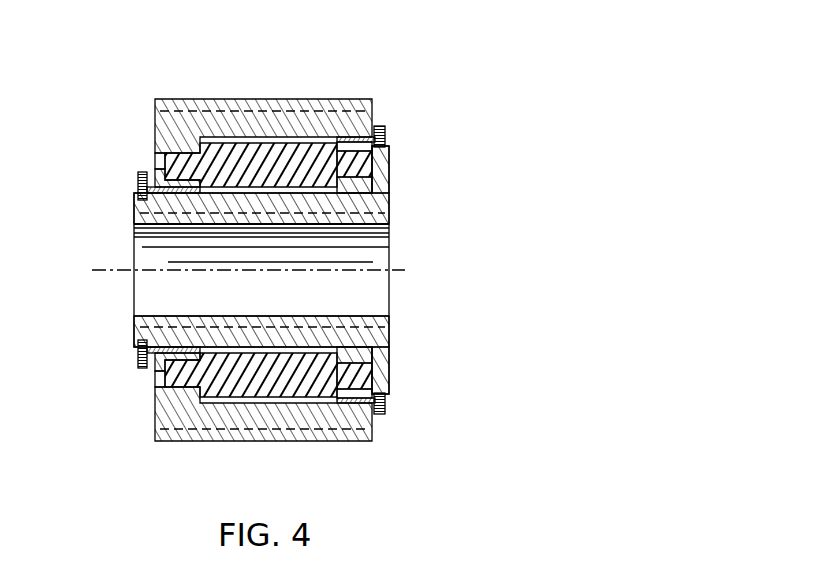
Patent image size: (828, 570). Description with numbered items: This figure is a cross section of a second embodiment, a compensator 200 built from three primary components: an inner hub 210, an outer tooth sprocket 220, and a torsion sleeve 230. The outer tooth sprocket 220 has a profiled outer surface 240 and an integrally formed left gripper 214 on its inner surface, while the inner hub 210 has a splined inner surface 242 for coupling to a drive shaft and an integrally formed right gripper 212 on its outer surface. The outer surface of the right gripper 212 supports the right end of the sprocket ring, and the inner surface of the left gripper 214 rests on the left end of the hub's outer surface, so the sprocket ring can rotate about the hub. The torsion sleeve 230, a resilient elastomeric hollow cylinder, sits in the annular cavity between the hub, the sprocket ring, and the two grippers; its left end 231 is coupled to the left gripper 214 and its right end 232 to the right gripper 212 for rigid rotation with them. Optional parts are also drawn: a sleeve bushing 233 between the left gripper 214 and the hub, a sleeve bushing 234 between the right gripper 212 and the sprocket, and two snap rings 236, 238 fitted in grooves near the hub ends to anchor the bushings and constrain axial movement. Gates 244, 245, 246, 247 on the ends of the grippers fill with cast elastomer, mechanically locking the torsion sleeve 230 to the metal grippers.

The compensator 200 is at (415, 43).
The inner hub 210 is at (313, 203).
The right gripper 212 is at (383, 189).
The left gripper 214 is at (163, 150).
The outer tooth sprocket 220 is at (340, 123).
The torsion sleeve 230 is at (383, 149).
The left end 231 is at (156, 152).
The right end 232 is at (372, 166).
The sleeve bushing 233 is at (140, 184).
The sleeve bushing 234 is at (378, 146).
The snap ring 236 is at (383, 410).
The snap ring 238 is at (139, 358).
The profiled outer surface 240 is at (322, 99).
The splined inner surface 242 is at (347, 316).
The gate 244 is at (385, 373).
The gate 245 is at (383, 172).
The gate 246 is at (157, 375).
The gate 247 is at (153, 165).